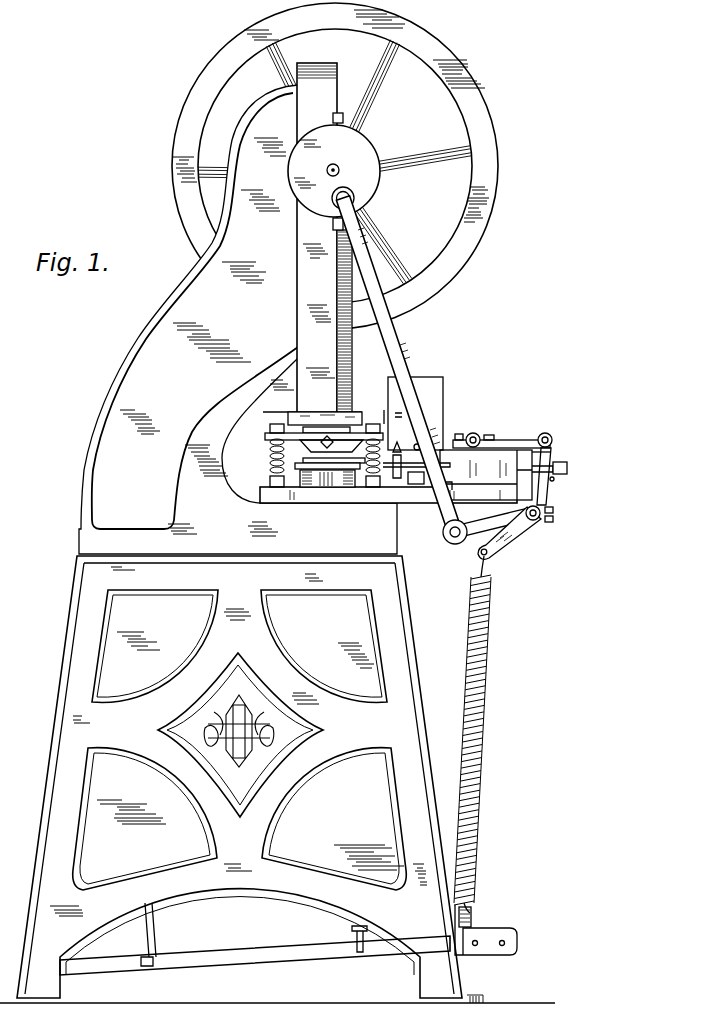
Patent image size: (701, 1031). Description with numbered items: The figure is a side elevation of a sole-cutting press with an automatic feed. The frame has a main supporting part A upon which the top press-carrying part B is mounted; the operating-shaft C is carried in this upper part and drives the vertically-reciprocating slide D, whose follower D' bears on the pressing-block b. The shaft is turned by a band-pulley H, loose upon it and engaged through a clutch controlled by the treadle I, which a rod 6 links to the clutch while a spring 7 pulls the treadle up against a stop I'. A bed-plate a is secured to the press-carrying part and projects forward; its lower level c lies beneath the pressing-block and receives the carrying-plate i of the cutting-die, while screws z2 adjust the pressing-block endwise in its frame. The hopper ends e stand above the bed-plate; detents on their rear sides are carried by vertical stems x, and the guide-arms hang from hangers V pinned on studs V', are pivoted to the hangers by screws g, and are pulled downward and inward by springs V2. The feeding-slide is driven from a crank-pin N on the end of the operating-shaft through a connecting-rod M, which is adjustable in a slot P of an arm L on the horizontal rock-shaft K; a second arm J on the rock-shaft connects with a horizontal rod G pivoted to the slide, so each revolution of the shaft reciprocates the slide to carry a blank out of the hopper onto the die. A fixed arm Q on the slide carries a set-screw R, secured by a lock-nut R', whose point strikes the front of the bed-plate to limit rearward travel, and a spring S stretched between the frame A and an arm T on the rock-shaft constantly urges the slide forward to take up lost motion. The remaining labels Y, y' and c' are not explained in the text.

The band-pulley H is at (335, 166).
The top press-carrying part B is at (238, 319).
The main supporting part A is at (277, 779).
The vertically-reciprocating slide D is at (333, 238).
The operating-shaft C is at (366, 167).
The crank-pin N is at (356, 190).
The connecting-rod M is at (398, 365).
The hopper end e is at (415, 413).
The follower of the press-slide D' is at (323, 413).
The vertical stem x is at (393, 418).
The pressing-block b is at (290, 430).
The upper plate Y is at (324, 439).
The adjusting screws z2 is at (333, 443).
The springs y' is at (315, 456).
The lower level of the bed-plate c is at (325, 479).
The carrying-plate i is at (331, 488).
The hangers V is at (416, 457).
The studs V' is at (446, 425).
The springs V2 is at (405, 491).
The stop c' is at (410, 483).
The screws g is at (449, 486).
The bed-plate a is at (396, 479).
The horizontal rod G is at (502, 436).
The arm J is at (537, 476).
The fixed arm Q is at (552, 453).
The set-screw R is at (569, 471).
The lock-nut R' is at (562, 490).
The rock-shaft K is at (554, 515).
The arm L is at (494, 522).
The arm T is at (509, 533).
The slot P is at (458, 541).
The spring S is at (475, 730).
The treadle I is at (288, 940).
The stop I' is at (485, 904).
The rod 6 is at (148, 934).
The spring 7 is at (352, 938).